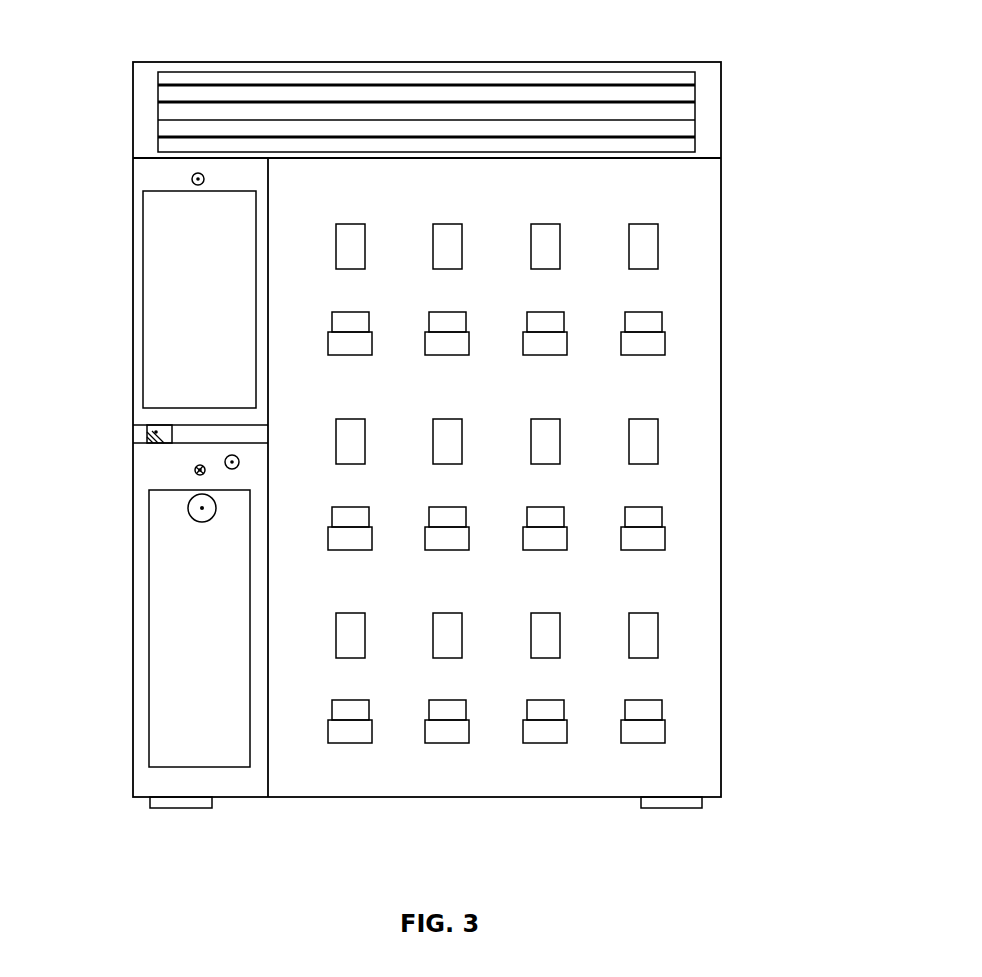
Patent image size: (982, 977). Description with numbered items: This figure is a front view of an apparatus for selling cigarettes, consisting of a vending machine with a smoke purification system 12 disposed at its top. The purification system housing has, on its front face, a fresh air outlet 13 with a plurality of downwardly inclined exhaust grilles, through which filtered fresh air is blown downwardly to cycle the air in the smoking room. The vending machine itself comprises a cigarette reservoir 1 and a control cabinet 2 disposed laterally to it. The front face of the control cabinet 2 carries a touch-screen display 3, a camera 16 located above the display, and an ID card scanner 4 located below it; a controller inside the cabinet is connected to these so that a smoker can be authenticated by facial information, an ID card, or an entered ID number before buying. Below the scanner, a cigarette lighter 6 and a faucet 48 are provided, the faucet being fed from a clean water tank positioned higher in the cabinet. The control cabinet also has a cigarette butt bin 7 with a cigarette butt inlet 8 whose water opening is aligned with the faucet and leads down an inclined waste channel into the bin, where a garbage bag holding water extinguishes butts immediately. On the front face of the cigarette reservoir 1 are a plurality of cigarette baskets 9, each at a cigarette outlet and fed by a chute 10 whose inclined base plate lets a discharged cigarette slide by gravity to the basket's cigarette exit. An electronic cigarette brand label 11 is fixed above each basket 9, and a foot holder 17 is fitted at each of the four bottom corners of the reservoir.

The cigarette reservoir 1 is at (479, 429).
The control cabinet 2 is at (154, 477).
The touch-screen display 3 is at (147, 299).
The ID card scanner 4 is at (106, 379).
The cigarette lighter 6 is at (139, 431).
The faucet 48 is at (127, 482).
The cigarette butt bin 7 is at (143, 628).
The cigarette butt inlet 8 is at (133, 536).
The cigarette basket 9 is at (581, 537).
The chute 10 is at (583, 516).
The cigarette brand label 11 is at (585, 441).
The smoke purification system 12 is at (478, 102).
The fresh air outlet 13 is at (426, 76).
The camera 16 is at (120, 154).
The foot holder 17 is at (388, 834).